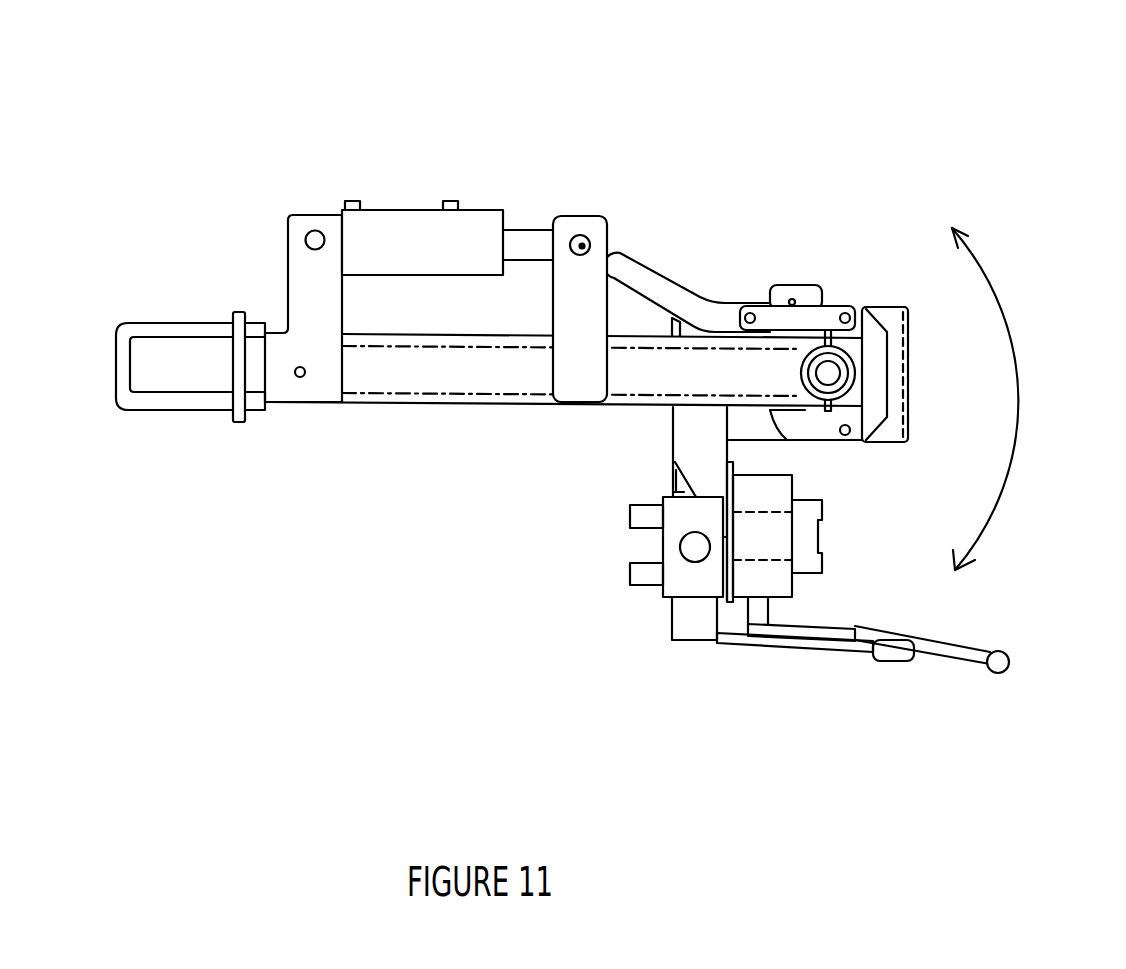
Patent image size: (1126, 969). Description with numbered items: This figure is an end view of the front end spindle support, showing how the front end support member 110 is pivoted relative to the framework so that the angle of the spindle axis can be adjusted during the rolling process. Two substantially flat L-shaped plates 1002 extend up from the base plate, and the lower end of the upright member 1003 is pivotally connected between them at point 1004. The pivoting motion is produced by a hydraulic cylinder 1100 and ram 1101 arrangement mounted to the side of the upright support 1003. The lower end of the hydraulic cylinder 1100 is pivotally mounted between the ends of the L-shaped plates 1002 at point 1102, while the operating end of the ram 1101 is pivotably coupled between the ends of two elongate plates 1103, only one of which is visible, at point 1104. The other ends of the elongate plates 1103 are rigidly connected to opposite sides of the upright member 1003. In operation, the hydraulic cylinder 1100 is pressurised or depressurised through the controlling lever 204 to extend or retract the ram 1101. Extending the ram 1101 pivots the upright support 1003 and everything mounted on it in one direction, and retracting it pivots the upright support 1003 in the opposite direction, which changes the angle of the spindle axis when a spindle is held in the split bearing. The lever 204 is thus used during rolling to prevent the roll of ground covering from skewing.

The front end support member 110 is at (1088, 76).
The L-shaped plates 1002 is at (302, 297).
The point 1102 is at (317, 236).
The point 1004 is at (301, 378).
The upright member 1003 is at (445, 365).
The hydraulic cylinder 1100 is at (427, 237).
The ram 1101 is at (537, 233).
The elongate plates 1103 is at (577, 223).
The point 1104 is at (583, 244).
The controlling lever 204 is at (887, 650).